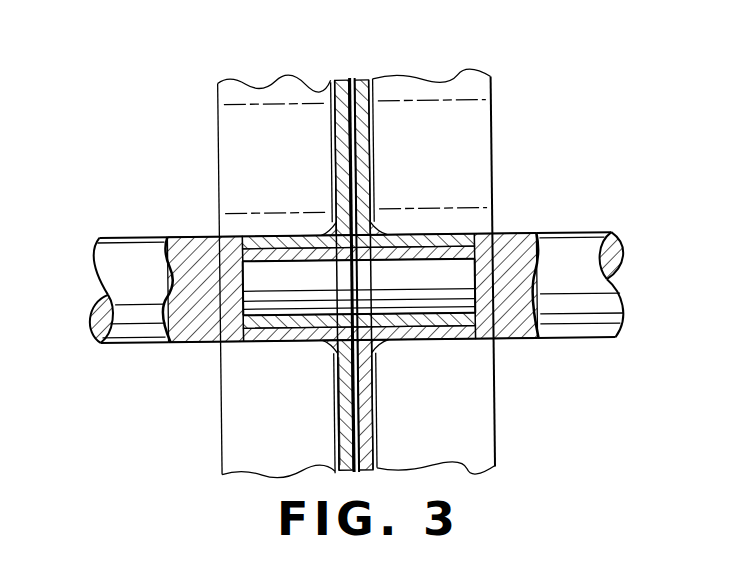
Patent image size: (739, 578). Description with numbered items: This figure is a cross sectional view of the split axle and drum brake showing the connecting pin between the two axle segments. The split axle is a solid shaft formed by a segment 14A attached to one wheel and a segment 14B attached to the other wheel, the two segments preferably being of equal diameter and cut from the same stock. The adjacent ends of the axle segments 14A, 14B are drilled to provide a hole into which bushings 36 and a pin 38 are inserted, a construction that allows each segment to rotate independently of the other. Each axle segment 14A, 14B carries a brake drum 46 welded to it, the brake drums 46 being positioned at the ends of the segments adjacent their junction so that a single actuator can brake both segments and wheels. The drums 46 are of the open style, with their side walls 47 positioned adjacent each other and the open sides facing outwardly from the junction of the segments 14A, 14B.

The axle segment 14A is at (593, 330).
The axle segment 14B is at (130, 330).
The bushings 36 is at (291, 328).
The pin 38 is at (462, 270).
The brake drum 46 is at (240, 145).
The side walls 47 is at (345, 80).